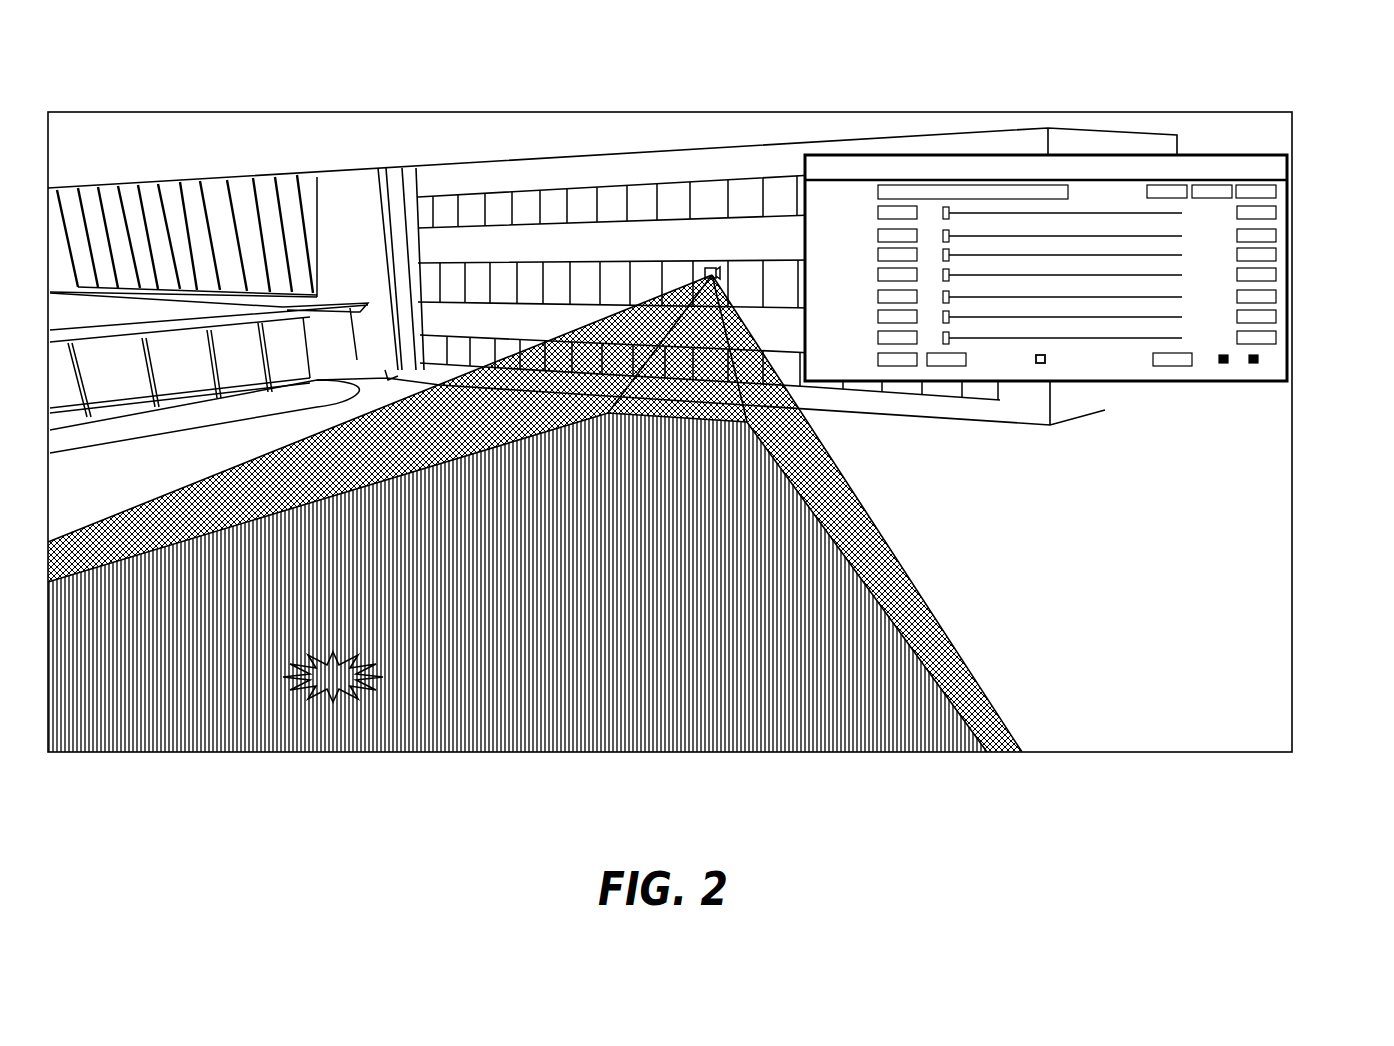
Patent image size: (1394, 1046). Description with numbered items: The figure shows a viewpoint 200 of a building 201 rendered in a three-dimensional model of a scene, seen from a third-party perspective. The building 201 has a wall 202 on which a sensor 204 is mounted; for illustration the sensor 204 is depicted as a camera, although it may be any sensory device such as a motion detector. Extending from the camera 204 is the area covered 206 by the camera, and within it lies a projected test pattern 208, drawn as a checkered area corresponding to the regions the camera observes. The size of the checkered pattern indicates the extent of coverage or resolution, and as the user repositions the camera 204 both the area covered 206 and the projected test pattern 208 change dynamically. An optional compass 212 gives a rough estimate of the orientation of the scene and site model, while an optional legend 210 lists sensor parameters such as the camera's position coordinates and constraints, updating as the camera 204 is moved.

The viewpoint 200 is at (1200, 73).
The building 201 is at (228, 232).
The wall 202 is at (753, 170).
The sensor 204 is at (708, 270).
The area covered 206 is at (795, 448).
The projected test pattern 208 is at (795, 617).
The legend 210 is at (1178, 168).
The compass 212 is at (323, 683).